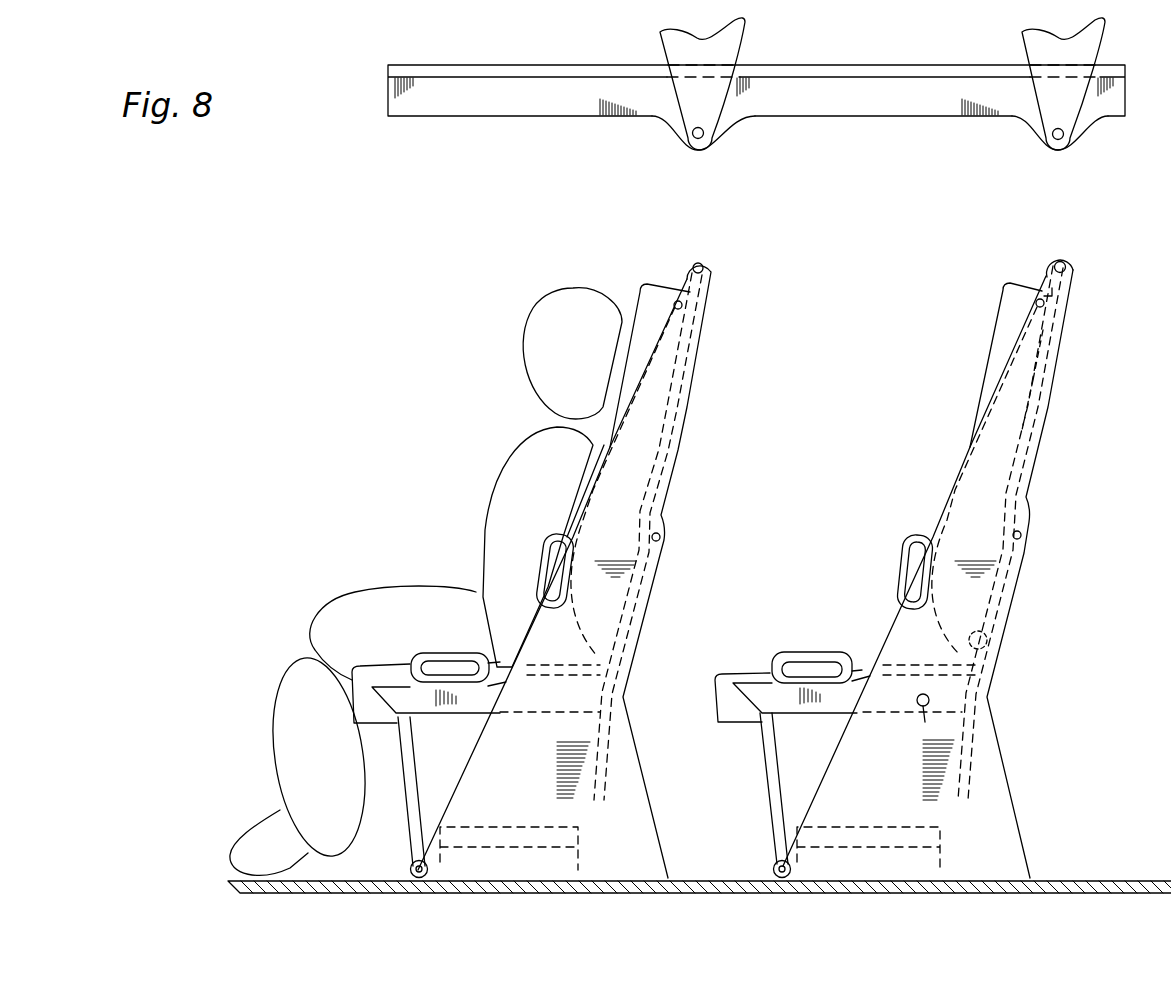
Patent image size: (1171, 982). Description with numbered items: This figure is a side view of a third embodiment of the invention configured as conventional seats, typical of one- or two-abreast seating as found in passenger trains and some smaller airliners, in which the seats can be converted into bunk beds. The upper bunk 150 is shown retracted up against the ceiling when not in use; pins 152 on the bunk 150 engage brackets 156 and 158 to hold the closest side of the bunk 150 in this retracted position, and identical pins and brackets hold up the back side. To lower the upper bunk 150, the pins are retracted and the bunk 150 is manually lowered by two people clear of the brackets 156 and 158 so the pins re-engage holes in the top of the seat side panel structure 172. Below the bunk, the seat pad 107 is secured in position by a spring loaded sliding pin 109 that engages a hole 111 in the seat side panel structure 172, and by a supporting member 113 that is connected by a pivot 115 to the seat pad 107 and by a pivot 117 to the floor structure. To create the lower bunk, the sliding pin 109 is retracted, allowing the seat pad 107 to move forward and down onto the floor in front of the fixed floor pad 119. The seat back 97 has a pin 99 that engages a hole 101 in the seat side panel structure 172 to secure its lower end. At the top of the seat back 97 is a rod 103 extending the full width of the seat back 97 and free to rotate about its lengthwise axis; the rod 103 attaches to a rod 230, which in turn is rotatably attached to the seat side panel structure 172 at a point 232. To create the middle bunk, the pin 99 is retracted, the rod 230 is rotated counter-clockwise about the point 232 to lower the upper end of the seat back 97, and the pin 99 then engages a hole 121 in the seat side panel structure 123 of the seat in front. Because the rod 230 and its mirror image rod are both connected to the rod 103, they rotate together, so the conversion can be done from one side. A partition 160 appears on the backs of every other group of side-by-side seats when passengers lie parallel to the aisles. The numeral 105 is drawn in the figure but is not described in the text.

The upper bunk 150 is at (845, 66).
The pin 152 is at (703, 148).
The bracket 156 is at (713, 124).
The bracket 158 is at (1067, 141).
The seat back 97 is at (988, 380).
The pin 99 is at (986, 640).
The hole 101 is at (983, 670).
The rod 103 is at (1032, 300).
The upper pivot 105 is at (1050, 288).
The seat pad 107 is at (775, 716).
The spring loaded sliding pin 109 is at (924, 737).
The hole 111 is at (915, 716).
The supporting member 113 is at (771, 812).
The pivot 115 is at (755, 722).
The pivot 117 is at (771, 866).
The fixed floor pad 119 is at (906, 880).
The hole 121 is at (664, 553).
The seat side panel structure 123 is at (655, 450).
The partition 160 is at (982, 712).
The seat side panel structure 172 is at (690, 378).
The rod 230 is at (1040, 350).
The point 232 is at (1030, 398).